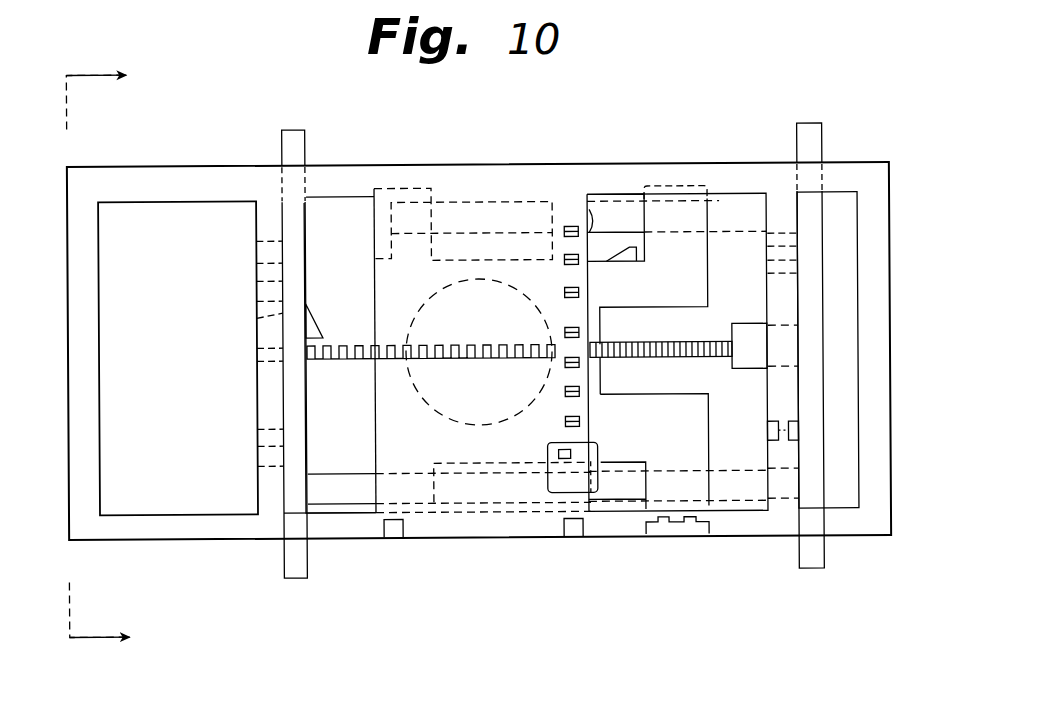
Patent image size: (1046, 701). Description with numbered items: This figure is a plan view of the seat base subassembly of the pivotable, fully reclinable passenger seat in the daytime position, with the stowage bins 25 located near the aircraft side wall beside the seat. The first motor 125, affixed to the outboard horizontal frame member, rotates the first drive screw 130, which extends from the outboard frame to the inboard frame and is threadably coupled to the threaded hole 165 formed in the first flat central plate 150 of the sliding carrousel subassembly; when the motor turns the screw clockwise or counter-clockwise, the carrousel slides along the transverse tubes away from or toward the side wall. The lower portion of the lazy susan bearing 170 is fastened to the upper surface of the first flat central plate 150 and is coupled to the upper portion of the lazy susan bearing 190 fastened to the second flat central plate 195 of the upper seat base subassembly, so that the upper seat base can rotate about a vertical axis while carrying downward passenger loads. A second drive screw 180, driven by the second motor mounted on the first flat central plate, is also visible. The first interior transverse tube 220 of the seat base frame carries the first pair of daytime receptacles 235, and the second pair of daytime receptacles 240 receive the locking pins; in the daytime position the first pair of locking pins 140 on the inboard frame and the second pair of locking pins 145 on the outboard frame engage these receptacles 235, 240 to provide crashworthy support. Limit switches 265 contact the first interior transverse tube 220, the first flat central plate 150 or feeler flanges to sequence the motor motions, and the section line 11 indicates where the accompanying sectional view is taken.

The section line 11- 11 is at (122, 357).
The floor-mounted stowage bins 25 is at (904, 378).
The first motor 125 is at (755, 372).
The first drive screw 130 is at (272, 366).
The first pair of locking pins 140 is at (268, 273).
The second pair of locking pins 145 is at (804, 267).
The first flat central plate 150 is at (403, 284).
The threaded hole 165 is at (608, 336).
The lower portion of lazy susan bearing 170 is at (489, 430).
The second drive screw 180 is at (597, 418).
The upper portion of lazy susan bearing 190 is at (466, 430).
The second flat central plate 195 is at (426, 288).
The first interior transverse tube 220 is at (268, 232).
The first pair of daytime receptacles 235 is at (266, 289).
The second pair of daytime receptacles 240 is at (773, 246).
The limit switches 265 is at (631, 241).